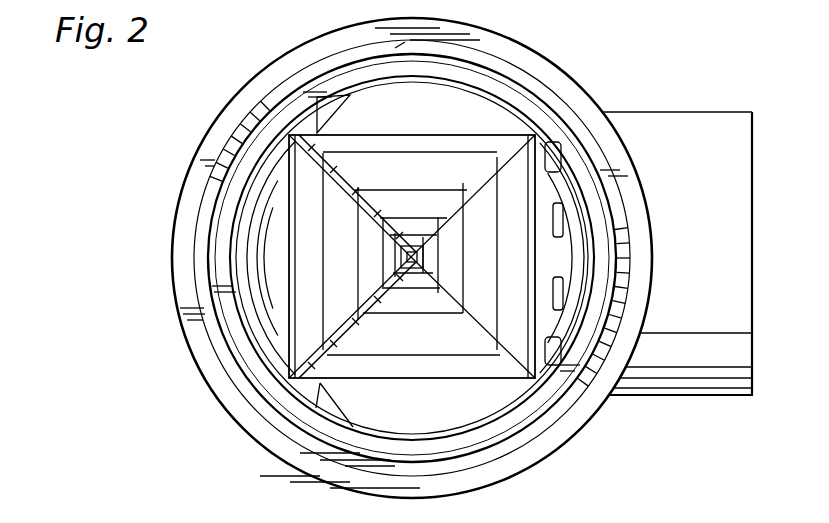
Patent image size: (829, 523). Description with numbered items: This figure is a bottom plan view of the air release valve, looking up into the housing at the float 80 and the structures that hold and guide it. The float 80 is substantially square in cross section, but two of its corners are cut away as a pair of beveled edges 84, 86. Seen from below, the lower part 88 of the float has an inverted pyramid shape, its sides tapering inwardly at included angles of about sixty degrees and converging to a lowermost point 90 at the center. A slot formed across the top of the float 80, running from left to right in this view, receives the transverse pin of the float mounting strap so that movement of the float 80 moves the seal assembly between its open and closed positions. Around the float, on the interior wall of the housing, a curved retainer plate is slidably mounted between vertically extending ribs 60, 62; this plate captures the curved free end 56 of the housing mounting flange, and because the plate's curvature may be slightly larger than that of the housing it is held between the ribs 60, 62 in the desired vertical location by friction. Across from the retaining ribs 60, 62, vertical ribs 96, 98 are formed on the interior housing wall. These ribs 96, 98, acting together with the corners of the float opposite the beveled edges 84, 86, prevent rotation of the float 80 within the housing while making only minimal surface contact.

The curved free end 56 is at (577, 253).
The vertically extending rib 60 is at (547, 140).
The vertically extending rib 62 is at (543, 347).
The float 80 is at (458, 398).
The beveled edge 84 is at (290, 140).
The beveled edge 86 is at (298, 370).
The lower part of the float 88 is at (387, 167).
The lowermost point 90 is at (413, 253).
The vertical rib 96 is at (333, 121).
The vertical rib 98 is at (333, 410).